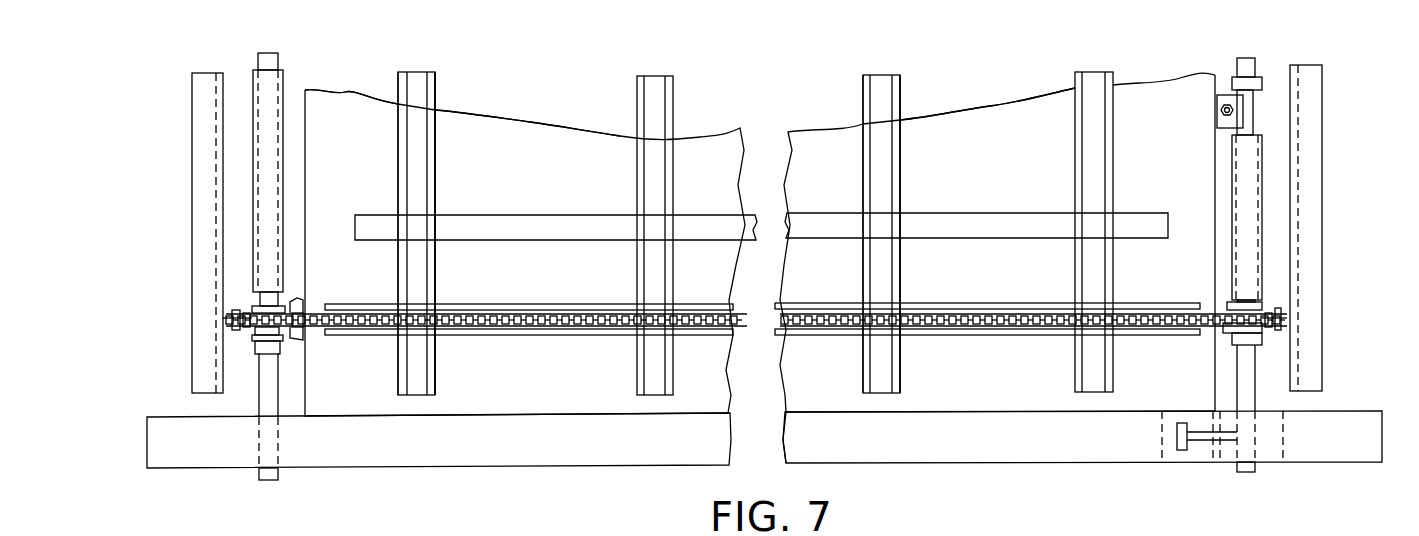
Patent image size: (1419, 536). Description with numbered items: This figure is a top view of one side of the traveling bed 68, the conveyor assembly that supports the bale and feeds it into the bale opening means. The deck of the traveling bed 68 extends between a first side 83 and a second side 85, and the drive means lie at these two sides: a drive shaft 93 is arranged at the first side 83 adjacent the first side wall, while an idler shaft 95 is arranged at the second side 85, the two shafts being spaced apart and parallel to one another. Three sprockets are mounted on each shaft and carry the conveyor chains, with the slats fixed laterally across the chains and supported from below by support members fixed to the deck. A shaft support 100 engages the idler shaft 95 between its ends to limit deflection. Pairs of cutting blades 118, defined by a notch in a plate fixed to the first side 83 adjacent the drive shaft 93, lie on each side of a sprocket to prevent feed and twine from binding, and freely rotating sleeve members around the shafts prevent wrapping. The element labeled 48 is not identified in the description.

The bolt 48 is at (1194, 450).
The traveling bed 68 is at (514, 66).
The first side 83 is at (312, 115).
The second side 85 is at (1165, 107).
The drive shaft 93 is at (268, 58).
The idler shaft 95 is at (1250, 62).
The shaft support 100 is at (1227, 125).
The cutting blades 118 is at (299, 303).